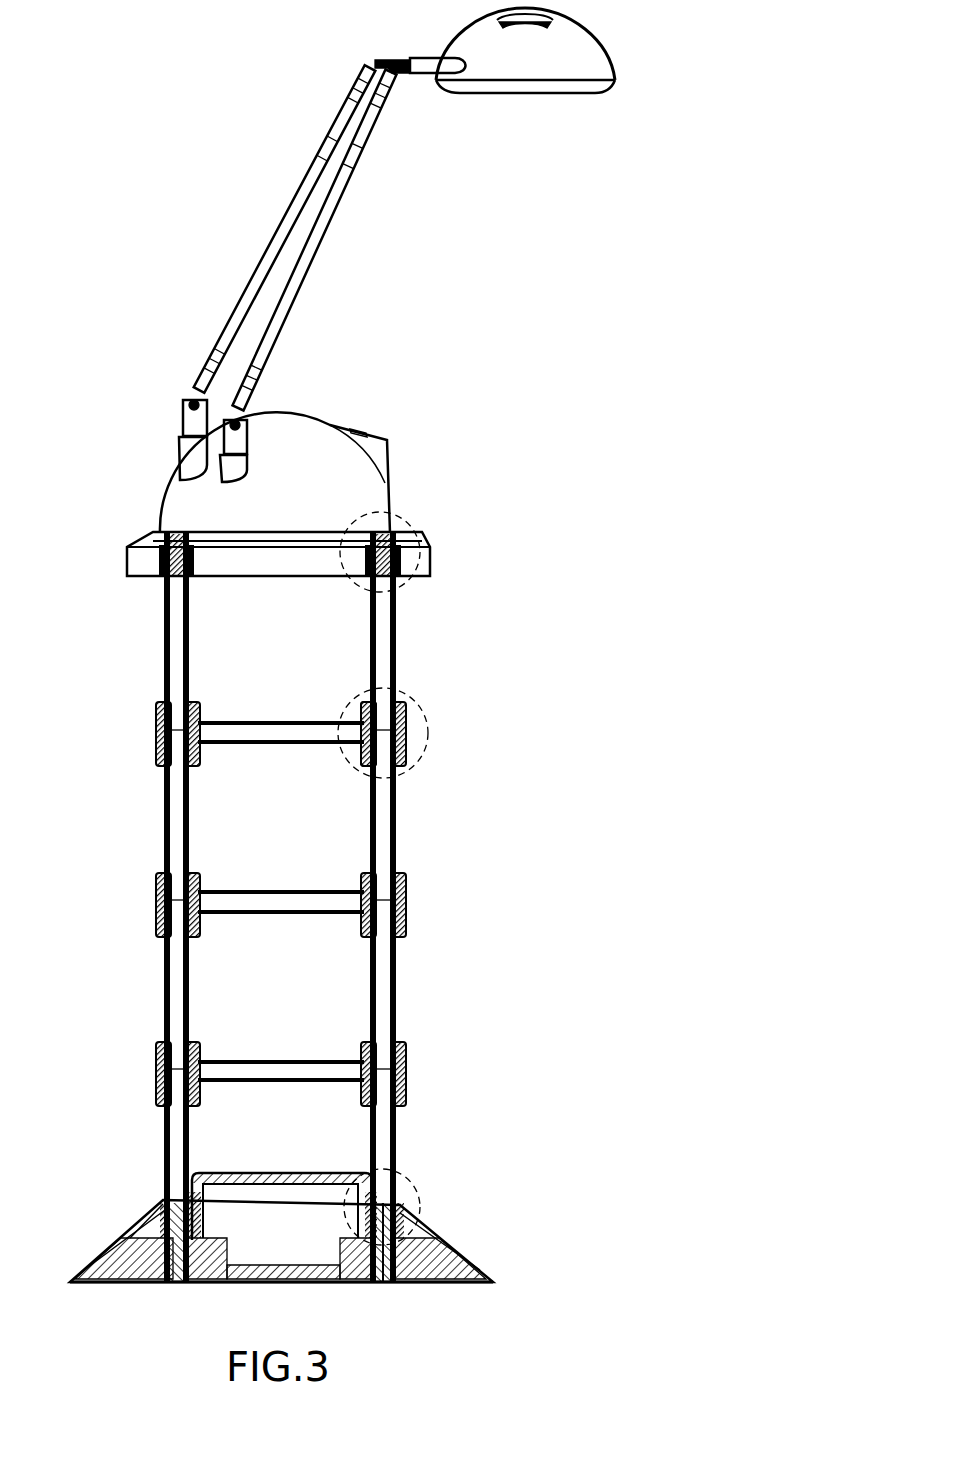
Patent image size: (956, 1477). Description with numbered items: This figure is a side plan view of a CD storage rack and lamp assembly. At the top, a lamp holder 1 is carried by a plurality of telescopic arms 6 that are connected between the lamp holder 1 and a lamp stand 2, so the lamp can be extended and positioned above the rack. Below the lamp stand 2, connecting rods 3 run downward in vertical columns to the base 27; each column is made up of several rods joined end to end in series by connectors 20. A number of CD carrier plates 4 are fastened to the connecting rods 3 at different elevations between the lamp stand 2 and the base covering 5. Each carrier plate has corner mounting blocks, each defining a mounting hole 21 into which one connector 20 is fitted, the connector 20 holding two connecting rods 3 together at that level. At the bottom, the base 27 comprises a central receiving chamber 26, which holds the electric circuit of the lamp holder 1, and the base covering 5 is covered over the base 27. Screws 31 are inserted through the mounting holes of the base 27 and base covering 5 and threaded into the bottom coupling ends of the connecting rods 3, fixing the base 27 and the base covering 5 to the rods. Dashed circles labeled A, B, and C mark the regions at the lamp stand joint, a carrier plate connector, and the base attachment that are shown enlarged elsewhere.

The lamp holder 1 is at (572, 50).
The telescopic arms 6 is at (287, 318).
The lamp stand 2 is at (354, 478).
The connecting rods 3 is at (385, 612).
The CD carrier plates 4 is at (278, 723).
The connector 20 is at (396, 712).
The mounting hole 21 is at (402, 733).
The receiving chamber 26 is at (298, 1228).
The base covering 5 is at (493, 1278).
The screws 31 is at (384, 1284).
The base 27 is at (432, 1275).
The detail area A is at (420, 541).
The detail area B is at (429, 735).
The detail area C is at (418, 1195).